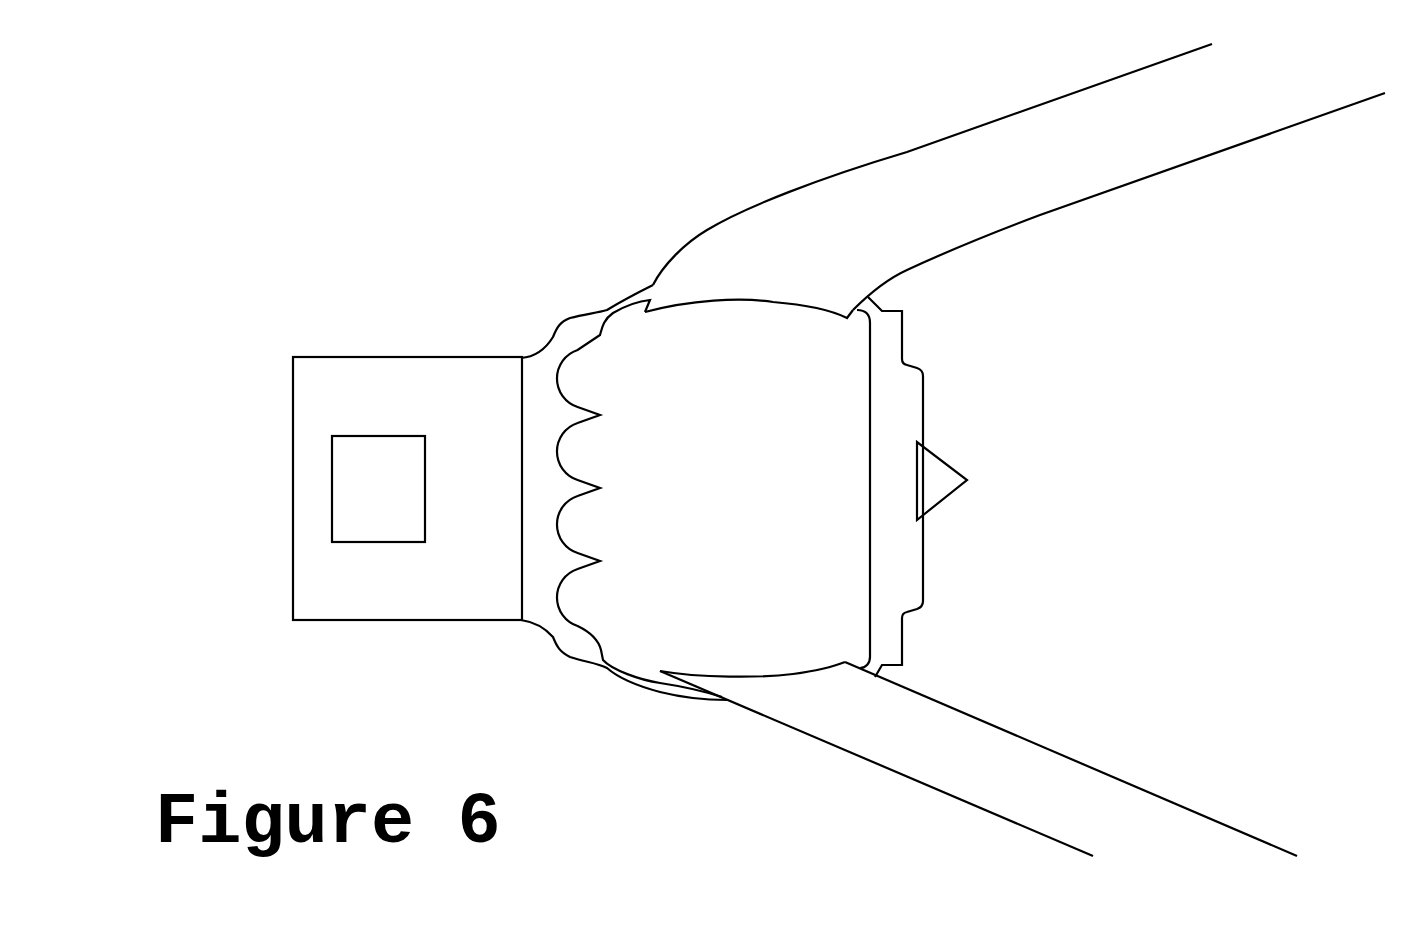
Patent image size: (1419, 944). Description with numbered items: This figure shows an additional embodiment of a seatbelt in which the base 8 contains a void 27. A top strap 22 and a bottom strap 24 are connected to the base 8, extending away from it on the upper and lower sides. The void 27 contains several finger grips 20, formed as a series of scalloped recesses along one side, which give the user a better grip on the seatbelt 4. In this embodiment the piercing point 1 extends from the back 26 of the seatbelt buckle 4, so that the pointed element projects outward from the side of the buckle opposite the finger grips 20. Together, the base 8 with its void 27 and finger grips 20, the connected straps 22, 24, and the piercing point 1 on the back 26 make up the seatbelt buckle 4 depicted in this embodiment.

The piercing point 1 is at (973, 499).
The seatbelt buckle 4 is at (274, 337).
The base 8 is at (544, 288).
The finger grips 20 is at (627, 506).
The top strap 22 is at (1200, 202).
The bottom strap 24 is at (1207, 785).
The back 26 is at (916, 409).
The void 27 is at (840, 350).